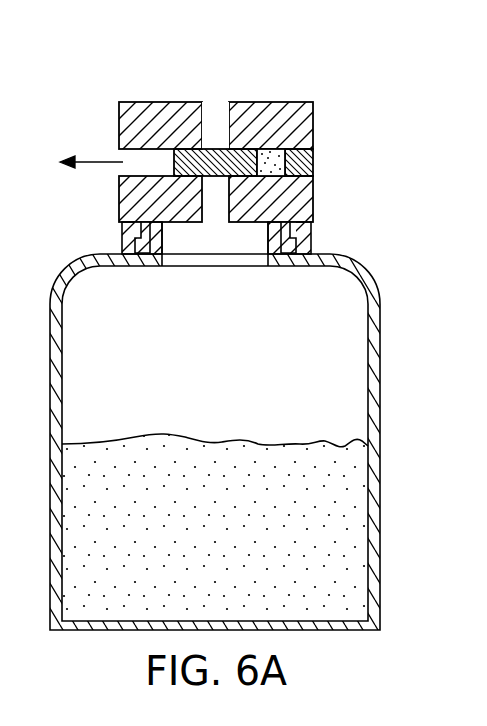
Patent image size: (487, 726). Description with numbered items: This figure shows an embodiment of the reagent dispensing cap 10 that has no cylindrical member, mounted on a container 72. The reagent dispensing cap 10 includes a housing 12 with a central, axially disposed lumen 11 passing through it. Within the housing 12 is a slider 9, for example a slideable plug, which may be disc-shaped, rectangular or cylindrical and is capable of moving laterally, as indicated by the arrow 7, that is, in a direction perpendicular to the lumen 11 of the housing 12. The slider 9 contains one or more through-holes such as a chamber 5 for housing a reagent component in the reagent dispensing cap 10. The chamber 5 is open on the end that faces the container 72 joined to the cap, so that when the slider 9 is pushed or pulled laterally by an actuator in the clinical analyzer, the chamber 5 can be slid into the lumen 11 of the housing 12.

The reagent dispensing cap 10 is at (78, 88).
The chamber 5 is at (236, 139).
The lumen 11 is at (216, 110).
The housing 12 is at (273, 110).
The slider 9 is at (313, 164).
The arrow 7 is at (82, 165).
The container 72 is at (375, 390).